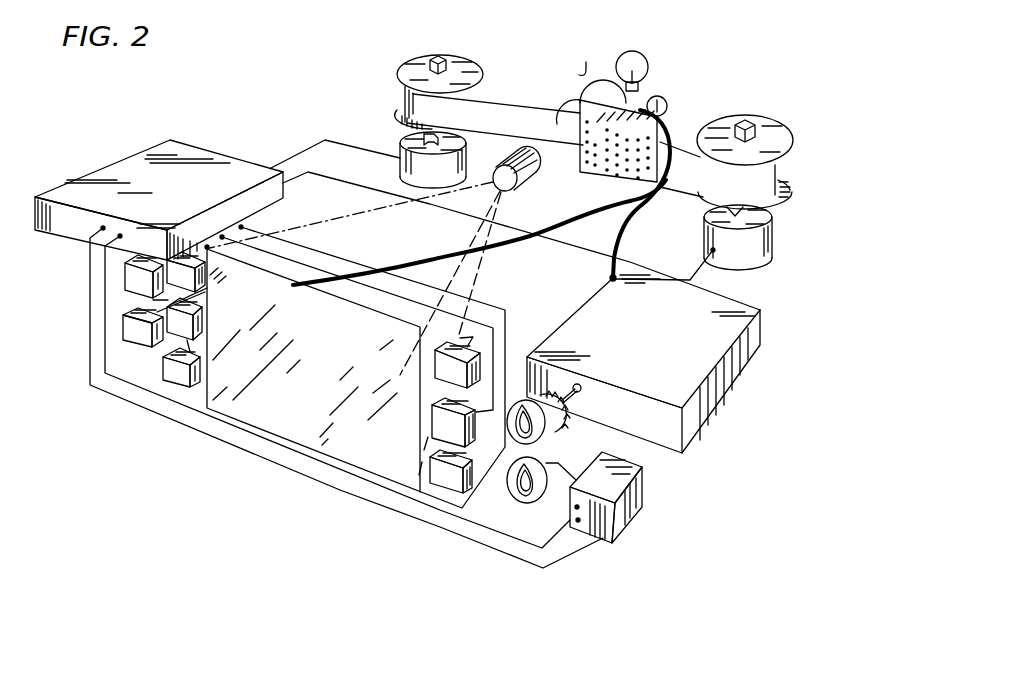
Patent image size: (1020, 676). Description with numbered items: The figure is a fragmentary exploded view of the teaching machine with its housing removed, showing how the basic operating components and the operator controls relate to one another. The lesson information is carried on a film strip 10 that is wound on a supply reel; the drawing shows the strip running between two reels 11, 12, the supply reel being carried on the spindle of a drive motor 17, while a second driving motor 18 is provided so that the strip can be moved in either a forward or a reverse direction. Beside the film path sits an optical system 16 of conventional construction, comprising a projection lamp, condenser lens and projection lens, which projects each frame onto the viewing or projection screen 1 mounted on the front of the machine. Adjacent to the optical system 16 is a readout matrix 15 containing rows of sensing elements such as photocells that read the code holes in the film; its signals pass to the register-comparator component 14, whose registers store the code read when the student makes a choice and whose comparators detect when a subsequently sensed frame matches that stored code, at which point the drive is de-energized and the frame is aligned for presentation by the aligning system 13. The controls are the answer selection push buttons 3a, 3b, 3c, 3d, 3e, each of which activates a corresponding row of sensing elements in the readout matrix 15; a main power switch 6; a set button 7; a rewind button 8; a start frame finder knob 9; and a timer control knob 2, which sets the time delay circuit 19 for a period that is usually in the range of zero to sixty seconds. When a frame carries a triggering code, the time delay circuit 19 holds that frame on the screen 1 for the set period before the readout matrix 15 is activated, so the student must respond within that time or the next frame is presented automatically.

The viewing or projection screen 1 is at (243, 420).
The timer control knob 2 is at (506, 498).
The answer selection push button 3a is at (185, 250).
The answer selection push button 3b is at (163, 310).
The answer selection push button 3c is at (160, 370).
The answer selection push button 3d is at (120, 280).
The answer selection push button 3e is at (118, 328).
The main power switch 6 is at (433, 380).
The set button 7 is at (431, 437).
The rewind button 8 is at (437, 485).
The start frame finder knob 9 is at (563, 435).
The film strip 10 is at (516, 100).
The supply reel 11 is at (404, 56).
The take-up reel 12 is at (764, 114).
The film aligning system 13 is at (140, 146).
The register-comparator component 14 is at (720, 408).
The readout matrix 15 is at (633, 106).
The optical system 16 is at (553, 190).
The drive motor 17 is at (403, 150).
The driving motor 18 is at (772, 245).
The time delay circuit 19 is at (585, 535).